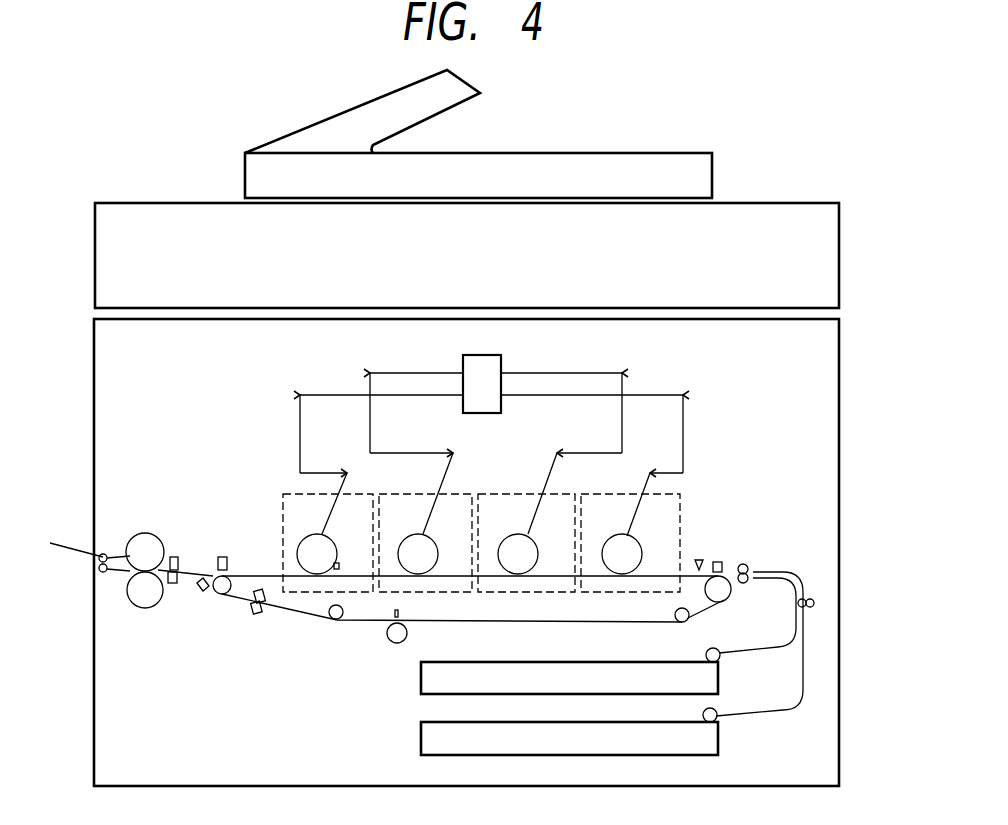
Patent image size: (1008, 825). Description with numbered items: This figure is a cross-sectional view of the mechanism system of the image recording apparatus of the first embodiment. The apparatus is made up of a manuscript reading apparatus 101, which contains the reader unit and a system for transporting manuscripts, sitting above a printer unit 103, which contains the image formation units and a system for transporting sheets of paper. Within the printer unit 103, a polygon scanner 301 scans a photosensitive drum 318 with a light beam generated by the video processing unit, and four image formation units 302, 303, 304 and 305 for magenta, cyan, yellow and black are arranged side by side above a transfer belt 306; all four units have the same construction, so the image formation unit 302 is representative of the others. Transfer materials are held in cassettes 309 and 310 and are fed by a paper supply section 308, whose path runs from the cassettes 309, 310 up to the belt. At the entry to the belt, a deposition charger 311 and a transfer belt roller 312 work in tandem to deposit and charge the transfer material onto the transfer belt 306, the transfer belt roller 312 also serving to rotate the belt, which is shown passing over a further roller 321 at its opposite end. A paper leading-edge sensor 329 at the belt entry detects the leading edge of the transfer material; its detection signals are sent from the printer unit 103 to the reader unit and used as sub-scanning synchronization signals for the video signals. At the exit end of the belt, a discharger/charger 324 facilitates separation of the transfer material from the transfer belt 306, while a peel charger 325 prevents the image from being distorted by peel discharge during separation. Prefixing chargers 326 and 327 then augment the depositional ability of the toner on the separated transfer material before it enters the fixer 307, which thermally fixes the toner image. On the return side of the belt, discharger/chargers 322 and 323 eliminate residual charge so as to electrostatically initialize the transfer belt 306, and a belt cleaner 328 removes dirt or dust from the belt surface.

The manuscript reading apparatus 101 is at (842, 213).
The printer unit 103 is at (842, 334).
The polygon scanner 301 is at (501, 360).
The image formation unit 302 is at (682, 494).
The image formation unit 303 is at (560, 494).
The image formation unit 304 is at (460, 494).
The image formation unit 305 is at (283, 494).
The transfer belt 306 is at (334, 620).
The fixer 307 is at (143, 533).
The paper supply section 308 is at (795, 573).
The cassette 309 is at (421, 686).
The cassette 310 is at (421, 745).
The deposition charger 311 is at (722, 562).
The transfer belt roller 312 is at (731, 597).
The photosensitive drum 318 is at (303, 540).
The belt driven roller 321 is at (340, 568).
The discharger/charger 322 is at (258, 600).
The discharger/charger 323 is at (255, 614).
The discharger/charger 324 is at (222, 556).
The peel charger 325 is at (203, 592).
The prefixing charger 326 is at (174, 556).
The prefixing charger 327 is at (170, 584).
The belt cleaner 328 is at (397, 643).
The paper leading-edge sensor 329 is at (699, 559).